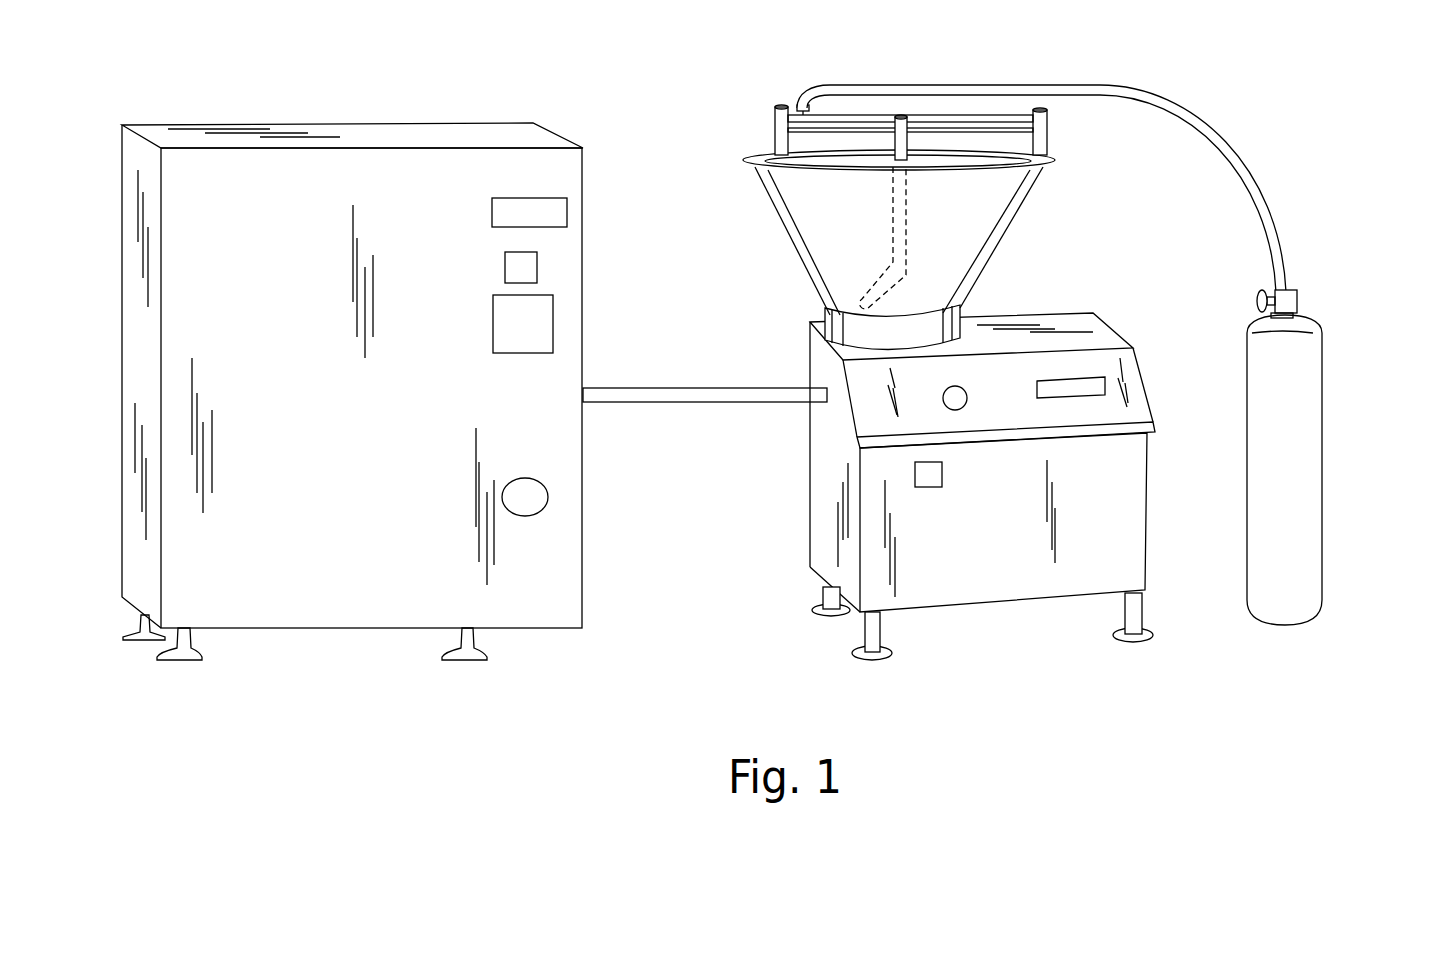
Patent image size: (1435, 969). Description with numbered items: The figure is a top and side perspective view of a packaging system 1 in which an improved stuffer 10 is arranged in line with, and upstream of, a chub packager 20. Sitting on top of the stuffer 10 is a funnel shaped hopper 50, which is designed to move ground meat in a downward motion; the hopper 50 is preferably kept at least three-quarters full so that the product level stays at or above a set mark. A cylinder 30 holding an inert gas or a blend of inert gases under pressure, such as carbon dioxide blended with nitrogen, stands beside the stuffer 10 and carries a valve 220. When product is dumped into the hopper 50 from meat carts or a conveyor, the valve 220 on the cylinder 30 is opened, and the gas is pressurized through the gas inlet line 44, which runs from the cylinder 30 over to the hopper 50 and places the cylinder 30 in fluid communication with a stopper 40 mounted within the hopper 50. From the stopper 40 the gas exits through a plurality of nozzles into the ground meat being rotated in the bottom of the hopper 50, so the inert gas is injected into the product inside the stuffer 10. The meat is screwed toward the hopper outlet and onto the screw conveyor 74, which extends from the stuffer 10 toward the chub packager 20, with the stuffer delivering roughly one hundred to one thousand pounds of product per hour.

The packaging system 1 is at (1413, 523).
The stuffer 10 is at (888, 382).
The chub packager 20 is at (360, 94).
The cylinder 30 is at (1322, 378).
The stopper 40 is at (923, 152).
The gas inlet line 44 is at (1212, 122).
The hopper 50 is at (800, 257).
The screw conveyor 74 is at (733, 402).
The valve 220 is at (1255, 300).